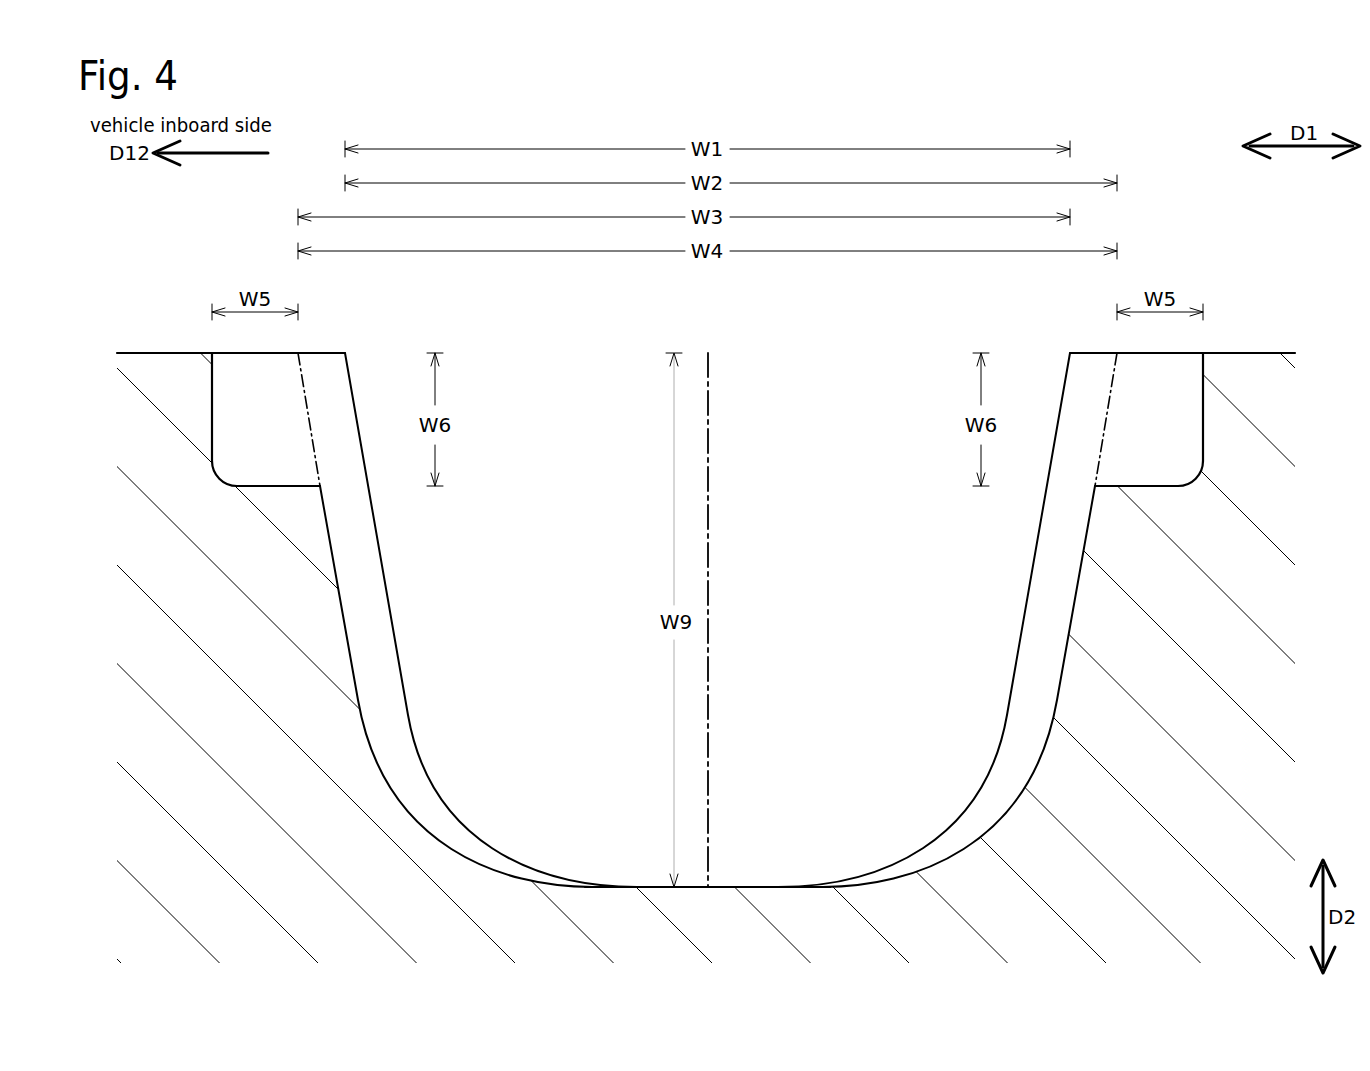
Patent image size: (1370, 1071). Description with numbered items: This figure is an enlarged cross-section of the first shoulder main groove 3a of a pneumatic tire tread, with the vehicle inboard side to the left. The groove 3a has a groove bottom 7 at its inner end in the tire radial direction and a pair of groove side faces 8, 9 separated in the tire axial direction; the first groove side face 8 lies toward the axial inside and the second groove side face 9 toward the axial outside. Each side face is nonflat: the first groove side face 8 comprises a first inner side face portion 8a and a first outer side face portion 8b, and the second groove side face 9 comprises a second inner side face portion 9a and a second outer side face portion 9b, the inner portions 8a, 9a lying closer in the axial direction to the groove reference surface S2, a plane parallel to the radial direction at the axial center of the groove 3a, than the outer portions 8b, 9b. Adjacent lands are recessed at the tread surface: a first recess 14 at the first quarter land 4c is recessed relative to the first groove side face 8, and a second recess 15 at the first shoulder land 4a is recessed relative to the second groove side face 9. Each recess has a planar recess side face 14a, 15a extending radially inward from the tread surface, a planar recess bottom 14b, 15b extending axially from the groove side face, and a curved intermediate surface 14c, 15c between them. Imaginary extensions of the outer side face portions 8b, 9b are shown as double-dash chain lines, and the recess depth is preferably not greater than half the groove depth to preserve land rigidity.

The first shoulder main groove 3a is at (707, 586).
The first shoulder land 4a is at (158, 351).
The first quarter land 4c is at (1258, 351).
The groove bottom 7 is at (765, 887).
The first groove side face 8 is at (936, 620).
The first inner side face portion 8a is at (1017, 642).
The first outer side face portion 8b is at (1070, 600).
The second groove side face 9 is at (478, 620).
The second inner side face portion 9a is at (397, 640).
The second outer side face portion 9b is at (347, 600).
The first recess 14 is at (1120, 378).
The recess side face 14a is at (1203, 387).
The recess bottom 14b is at (1123, 487).
The intermediate surface 14c is at (1193, 474).
The second recess 15 is at (295, 377).
The recess side face 15a is at (213, 387).
The recess bottom 15b is at (285, 487).
The intermediate surface 15c is at (223, 474).
The groove reference surface S2 is at (708, 528).